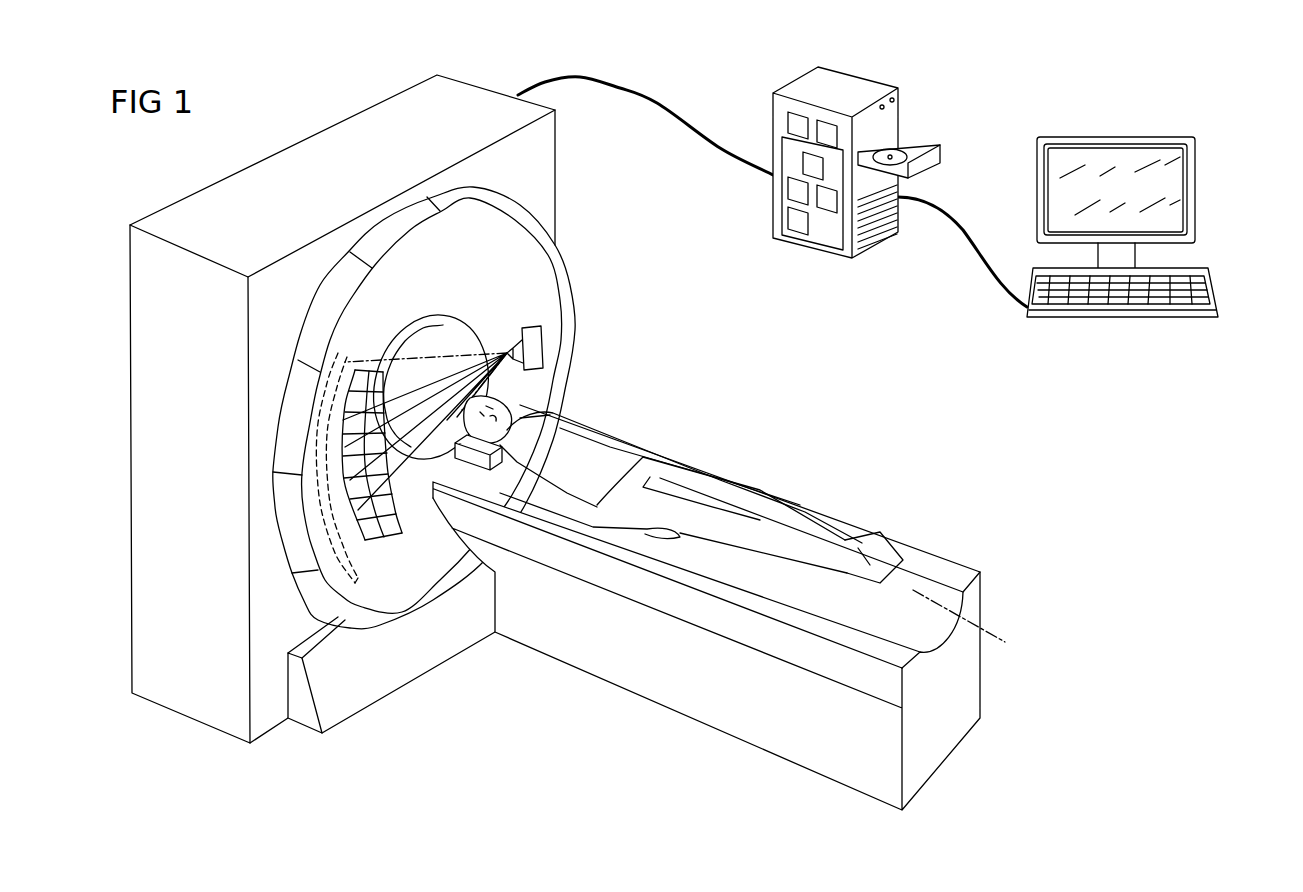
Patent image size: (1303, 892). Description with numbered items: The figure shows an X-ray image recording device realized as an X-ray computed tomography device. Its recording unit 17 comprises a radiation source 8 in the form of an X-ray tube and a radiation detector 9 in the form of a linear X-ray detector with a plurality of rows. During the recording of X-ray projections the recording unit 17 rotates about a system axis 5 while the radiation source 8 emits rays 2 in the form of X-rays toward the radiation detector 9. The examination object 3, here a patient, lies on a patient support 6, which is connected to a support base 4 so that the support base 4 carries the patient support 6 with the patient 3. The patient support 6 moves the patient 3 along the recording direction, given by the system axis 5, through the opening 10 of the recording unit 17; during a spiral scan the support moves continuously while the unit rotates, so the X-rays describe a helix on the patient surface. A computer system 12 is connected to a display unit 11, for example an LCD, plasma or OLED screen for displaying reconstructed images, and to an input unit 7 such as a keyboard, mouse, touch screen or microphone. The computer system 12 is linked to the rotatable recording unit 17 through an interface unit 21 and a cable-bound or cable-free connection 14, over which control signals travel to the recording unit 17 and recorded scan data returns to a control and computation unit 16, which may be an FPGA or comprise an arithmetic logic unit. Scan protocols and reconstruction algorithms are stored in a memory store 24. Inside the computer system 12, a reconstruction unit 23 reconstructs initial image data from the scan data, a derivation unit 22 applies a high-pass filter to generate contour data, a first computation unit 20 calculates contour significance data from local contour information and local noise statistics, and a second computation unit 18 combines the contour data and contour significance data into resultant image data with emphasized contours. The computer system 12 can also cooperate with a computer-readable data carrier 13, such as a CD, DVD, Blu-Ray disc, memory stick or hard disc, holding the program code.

The rays 2 is at (458, 320).
The examination object 3 is at (607, 457).
The support base 4 is at (718, 720).
The system axis 5 is at (998, 635).
The patient support 6 is at (963, 570).
The input unit 7 is at (1117, 318).
The radiation source 8 is at (545, 352).
The radiation detector 9 is at (358, 555).
The opening 10 is at (412, 353).
The display unit 11 is at (1033, 210).
The computer system 12 is at (847, 180).
The computer-readable data carrier 13 is at (905, 148).
The connection 14 is at (657, 103).
The control and computation unit 16 is at (835, 232).
The recording unit 17 is at (575, 275).
The second computation unit 18 is at (805, 163).
The first computation unit 20 is at (797, 190).
The interface unit 21 is at (823, 128).
The derivation unit 22 is at (833, 198).
The reconstruction unit 23 is at (800, 223).
The memory store 24 is at (790, 120).